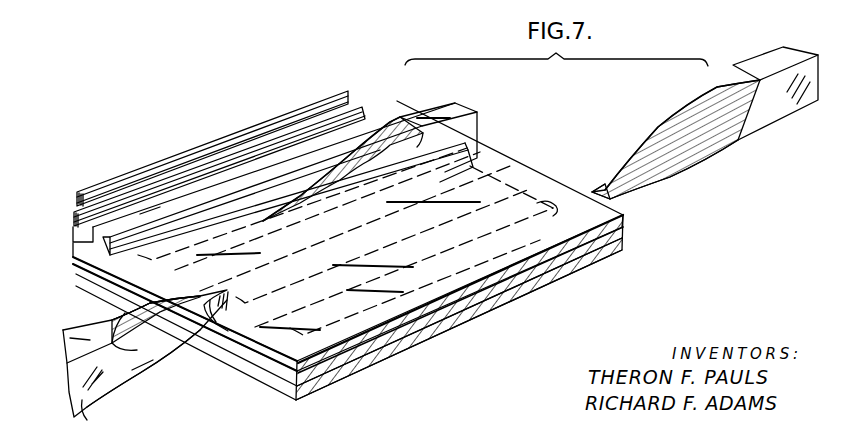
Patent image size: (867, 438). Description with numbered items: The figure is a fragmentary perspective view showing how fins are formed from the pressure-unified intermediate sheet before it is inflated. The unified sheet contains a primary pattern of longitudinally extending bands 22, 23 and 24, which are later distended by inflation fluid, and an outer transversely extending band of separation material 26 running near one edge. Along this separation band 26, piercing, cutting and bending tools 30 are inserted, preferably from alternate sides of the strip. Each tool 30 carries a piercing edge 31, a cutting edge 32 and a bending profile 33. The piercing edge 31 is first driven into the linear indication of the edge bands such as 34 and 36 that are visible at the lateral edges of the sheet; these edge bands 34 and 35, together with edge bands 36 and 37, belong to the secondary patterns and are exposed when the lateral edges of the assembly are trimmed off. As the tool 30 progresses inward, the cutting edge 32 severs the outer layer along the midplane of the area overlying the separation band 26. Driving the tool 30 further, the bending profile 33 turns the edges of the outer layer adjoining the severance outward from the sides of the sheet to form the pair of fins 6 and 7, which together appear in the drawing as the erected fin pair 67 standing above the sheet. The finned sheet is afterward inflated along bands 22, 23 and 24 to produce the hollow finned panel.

The fin 6 is at (270, 122).
The fin 7 is at (208, 207).
The rail and groove 67 is at (140, 212).
The longitudinally extending band 22 is at (347, 366).
The longitudinally extending band 23 is at (469, 294).
The longitudinally extending band 24 is at (573, 260).
The transversely extending band of separation material 26 is at (505, 170).
The piercing, cutting and bending tool 30 is at (458, 113).
The piercing edge 31 is at (630, 183).
The cutting edge 32 is at (363, 148).
The bending profile 33 is at (745, 127).
The edge band 34 is at (100, 287).
The edge band 35 is at (623, 223).
The edge band 36 is at (128, 302).
The edge band 37 is at (620, 253).